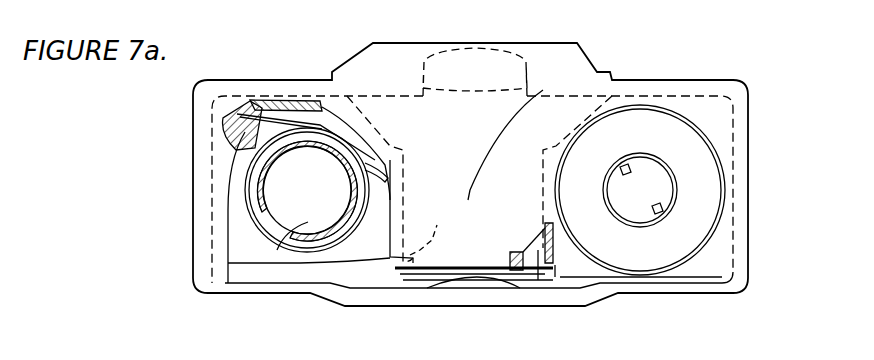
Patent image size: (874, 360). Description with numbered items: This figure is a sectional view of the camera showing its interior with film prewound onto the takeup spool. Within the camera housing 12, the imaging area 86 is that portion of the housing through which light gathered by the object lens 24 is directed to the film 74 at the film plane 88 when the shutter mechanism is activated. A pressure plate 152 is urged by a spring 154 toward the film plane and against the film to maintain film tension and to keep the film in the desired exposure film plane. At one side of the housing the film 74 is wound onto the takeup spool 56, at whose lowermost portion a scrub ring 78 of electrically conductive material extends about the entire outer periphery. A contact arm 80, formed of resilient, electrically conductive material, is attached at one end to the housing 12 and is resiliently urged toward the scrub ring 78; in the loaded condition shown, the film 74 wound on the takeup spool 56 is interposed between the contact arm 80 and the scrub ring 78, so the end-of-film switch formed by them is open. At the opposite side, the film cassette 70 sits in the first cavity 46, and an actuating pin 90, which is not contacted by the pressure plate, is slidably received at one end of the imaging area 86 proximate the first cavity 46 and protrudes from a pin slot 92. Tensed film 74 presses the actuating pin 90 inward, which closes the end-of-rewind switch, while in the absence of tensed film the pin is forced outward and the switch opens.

The camera housing 12 is at (688, 82).
The object lens 24 is at (462, 62).
The first cavity 46 is at (712, 121).
The takeup spool 56 is at (320, 240).
The film cassette 70 is at (667, 258).
The film 74 is at (338, 262).
The scrub ring 78 is at (258, 206).
The contact arm 80 is at (332, 124).
The imaging area 86 is at (516, 133).
The film plane 88 is at (414, 211).
The actuating pin 90 is at (538, 282).
The pin slot 92 is at (515, 270).
The pressure plate 152 is at (390, 273).
The spring 154 is at (470, 280).